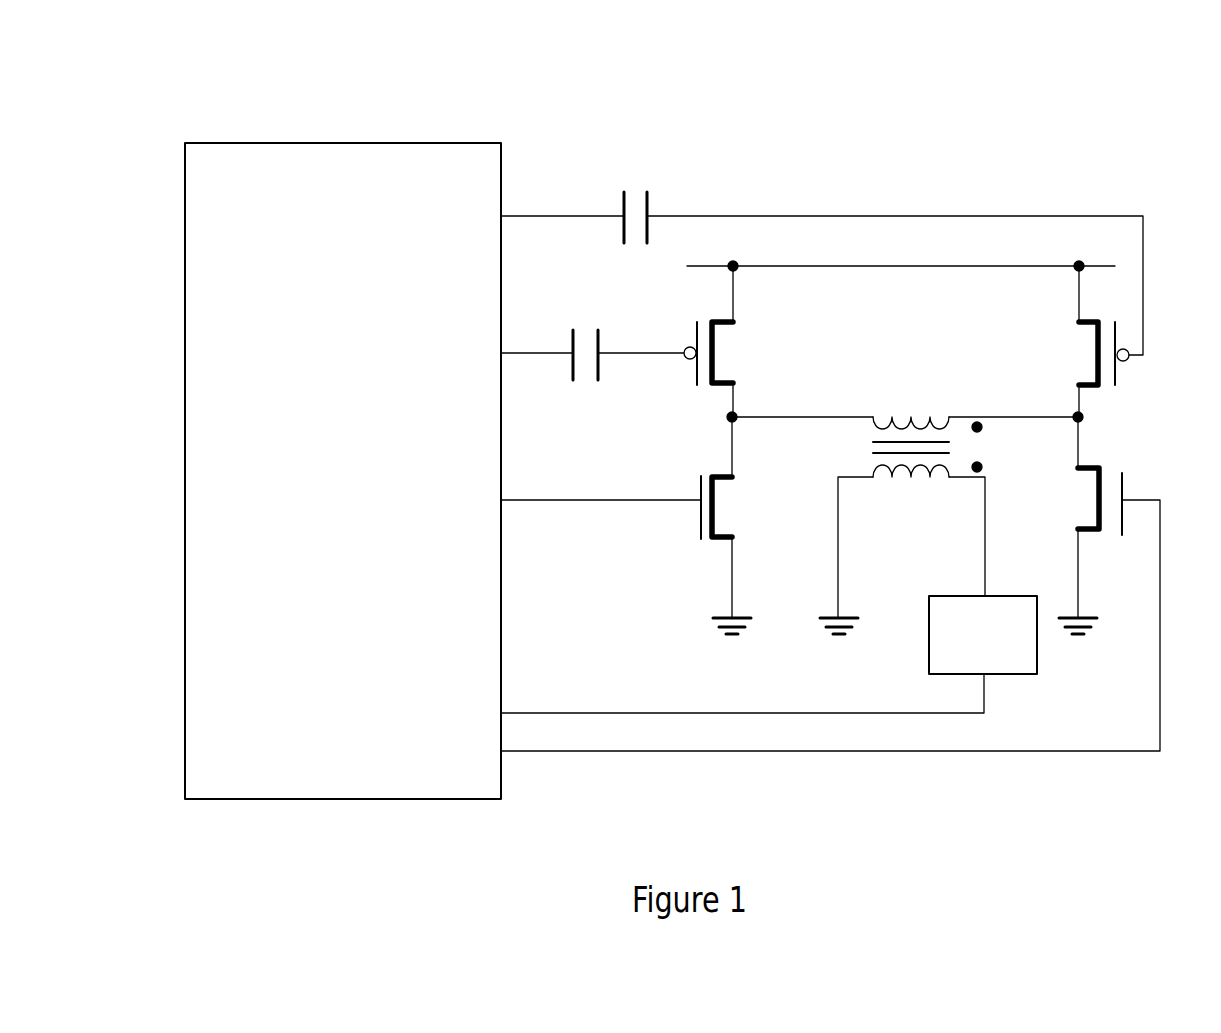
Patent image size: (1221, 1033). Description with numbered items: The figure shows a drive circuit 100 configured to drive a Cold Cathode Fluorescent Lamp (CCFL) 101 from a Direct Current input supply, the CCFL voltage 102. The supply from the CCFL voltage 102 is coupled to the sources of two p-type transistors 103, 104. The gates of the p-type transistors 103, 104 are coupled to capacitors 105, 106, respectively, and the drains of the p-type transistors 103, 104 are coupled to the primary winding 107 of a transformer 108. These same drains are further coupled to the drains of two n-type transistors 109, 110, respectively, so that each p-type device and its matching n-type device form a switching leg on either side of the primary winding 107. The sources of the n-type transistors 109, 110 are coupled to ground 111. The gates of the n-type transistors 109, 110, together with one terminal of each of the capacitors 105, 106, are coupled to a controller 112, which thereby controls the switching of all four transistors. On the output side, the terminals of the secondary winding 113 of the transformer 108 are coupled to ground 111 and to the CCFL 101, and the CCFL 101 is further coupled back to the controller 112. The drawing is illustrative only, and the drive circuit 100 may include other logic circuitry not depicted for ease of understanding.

The drive circuit 100 is at (966, 108).
The Cold Cathode Fluorescent Lamp (CCFL) 101 is at (1010, 595).
The CCFL voltage 102 is at (858, 266).
The p-type transistor 103 is at (715, 338).
The p-type transistor 104 is at (1094, 367).
The capacitor 105 is at (593, 337).
The capacitor 106 is at (626, 200).
The primary winding 107 is at (912, 400).
The transformer 108 is at (872, 452).
The n-type transistor 109 is at (715, 506).
The n-type transistor 110 is at (1100, 468).
The ground 111 is at (711, 633).
The controller 112 is at (392, 143).
The secondary winding 113 is at (913, 492).